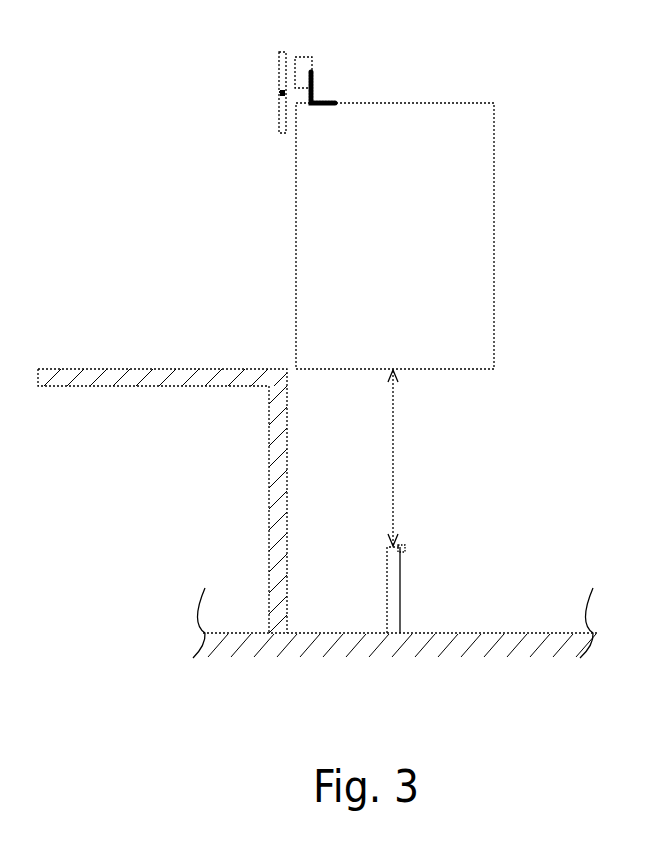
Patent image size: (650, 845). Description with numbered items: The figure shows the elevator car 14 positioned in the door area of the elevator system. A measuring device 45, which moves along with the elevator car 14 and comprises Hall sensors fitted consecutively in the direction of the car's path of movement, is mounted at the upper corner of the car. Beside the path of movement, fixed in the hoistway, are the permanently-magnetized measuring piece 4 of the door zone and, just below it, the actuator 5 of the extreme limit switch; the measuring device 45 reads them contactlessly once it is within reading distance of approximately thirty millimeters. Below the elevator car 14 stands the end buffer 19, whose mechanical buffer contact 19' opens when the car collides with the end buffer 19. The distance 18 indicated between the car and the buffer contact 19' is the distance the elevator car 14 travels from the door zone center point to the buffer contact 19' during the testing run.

The measuring piece of the door zone 4 is at (278, 72).
The actuator of the extreme limit switch 5 is at (278, 113).
The measuring device 45 is at (312, 62).
The elevator car 14 is at (412, 250).
The distance 18 is at (395, 461).
The end buffer 19 is at (445, 590).
The buffer contact 19' is at (454, 532).